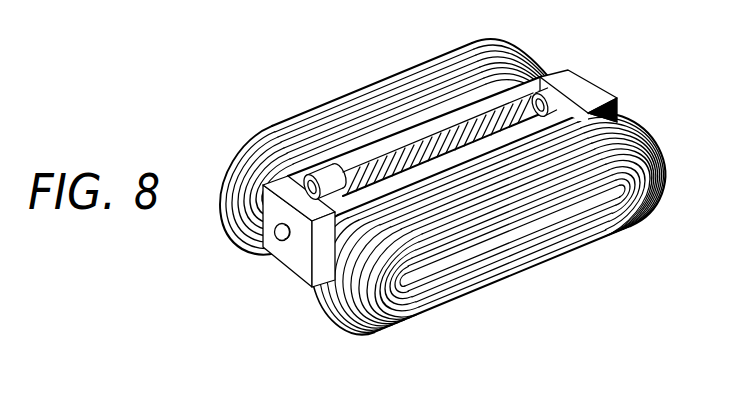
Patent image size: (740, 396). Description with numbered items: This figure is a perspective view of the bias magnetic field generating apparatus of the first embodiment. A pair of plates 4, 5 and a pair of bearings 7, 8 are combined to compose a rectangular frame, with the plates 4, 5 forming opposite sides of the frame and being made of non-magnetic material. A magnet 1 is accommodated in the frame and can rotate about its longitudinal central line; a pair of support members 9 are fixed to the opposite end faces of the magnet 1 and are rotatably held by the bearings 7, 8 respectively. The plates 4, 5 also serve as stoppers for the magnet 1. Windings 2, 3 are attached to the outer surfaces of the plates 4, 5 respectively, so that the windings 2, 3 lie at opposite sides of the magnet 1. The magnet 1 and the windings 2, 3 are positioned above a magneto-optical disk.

The magnet 1 is at (440, 118).
The winding 2 is at (430, 304).
The winding 3 is at (450, 53).
The plate 4 is at (589, 112).
The plate 5 is at (524, 72).
The bearing 7 is at (618, 99).
The bearing 8 is at (293, 268).
The support member 9 is at (275, 236).